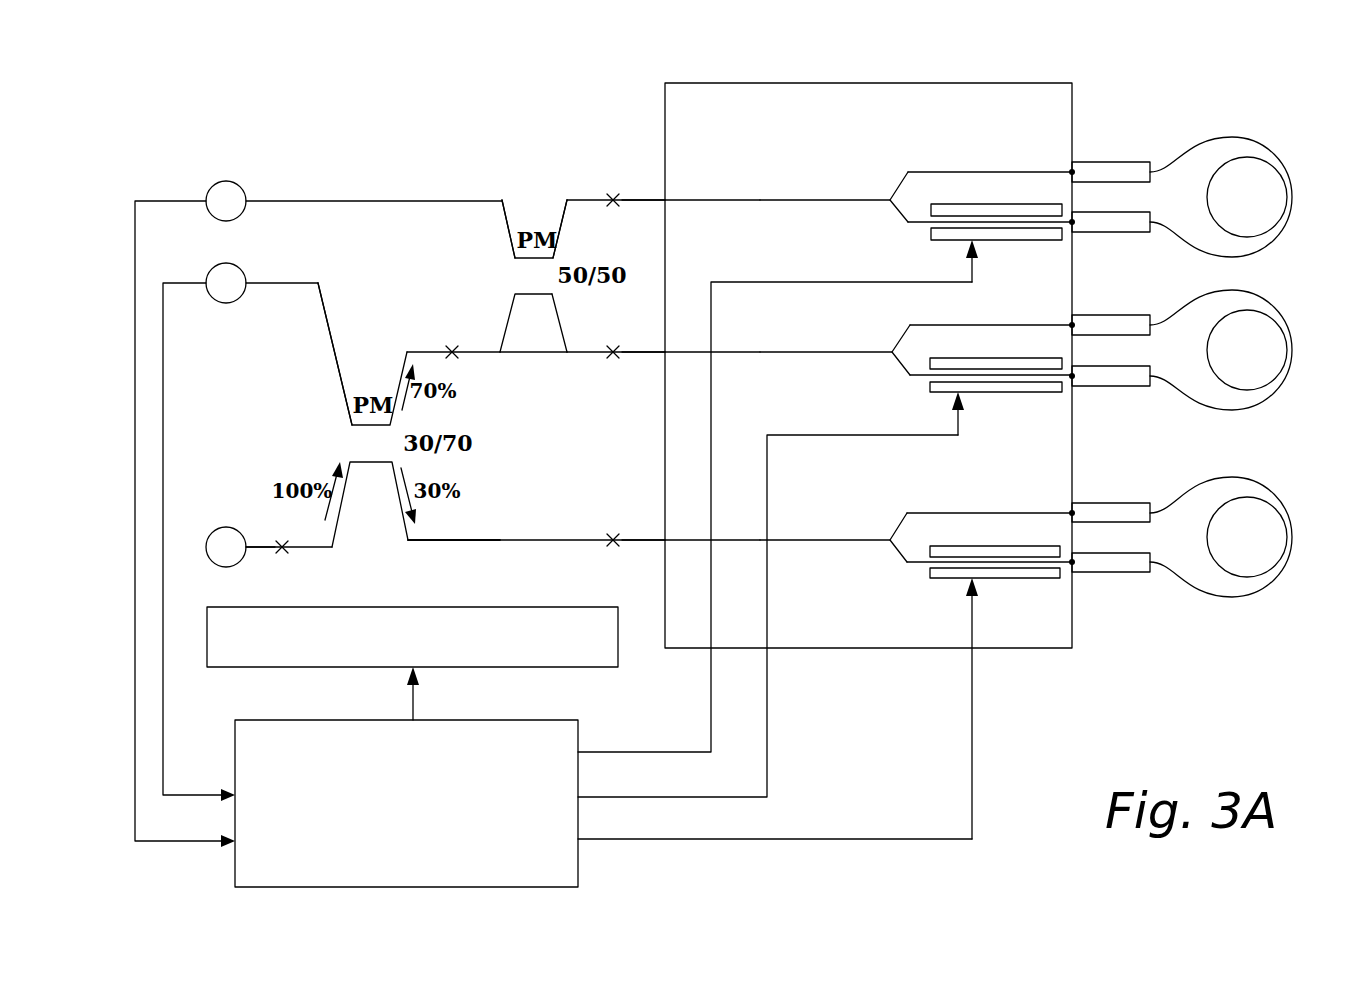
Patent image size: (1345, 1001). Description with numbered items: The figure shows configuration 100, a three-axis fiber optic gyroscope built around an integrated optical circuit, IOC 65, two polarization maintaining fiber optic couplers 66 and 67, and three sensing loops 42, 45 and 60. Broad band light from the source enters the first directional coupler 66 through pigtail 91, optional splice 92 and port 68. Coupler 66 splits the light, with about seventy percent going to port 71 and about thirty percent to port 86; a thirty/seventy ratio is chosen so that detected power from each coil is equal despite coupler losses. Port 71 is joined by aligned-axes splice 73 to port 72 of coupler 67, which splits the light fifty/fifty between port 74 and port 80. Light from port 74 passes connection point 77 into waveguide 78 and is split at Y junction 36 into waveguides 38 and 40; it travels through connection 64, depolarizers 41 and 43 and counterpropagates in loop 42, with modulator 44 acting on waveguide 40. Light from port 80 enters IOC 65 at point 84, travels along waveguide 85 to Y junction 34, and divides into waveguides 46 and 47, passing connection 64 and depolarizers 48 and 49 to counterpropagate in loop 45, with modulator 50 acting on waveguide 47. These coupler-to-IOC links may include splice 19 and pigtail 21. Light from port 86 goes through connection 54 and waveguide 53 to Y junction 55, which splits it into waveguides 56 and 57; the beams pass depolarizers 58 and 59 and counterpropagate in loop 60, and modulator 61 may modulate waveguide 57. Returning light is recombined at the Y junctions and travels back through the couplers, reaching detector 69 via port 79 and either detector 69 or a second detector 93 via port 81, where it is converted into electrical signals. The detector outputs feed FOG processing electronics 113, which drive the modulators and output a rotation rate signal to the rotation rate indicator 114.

The configuration 100 is at (1160, 69).
The IOC 65 is at (1060, 83).
The detector 69 is at (226, 181).
The second detector 93 is at (226, 303).
The modulator 61 is at (226, 527).
The port 81 is at (334, 298).
The first directional coupler 66 is at (352, 438).
The coupler 67 is at (515, 270).
The port 79 is at (512, 212).
The port 80 is at (562, 208).
The port 71 is at (407, 352).
The splice 73 is at (452, 346).
The port 72 is at (508, 338).
The port 74 is at (558, 340).
The port 68 is at (348, 505).
The port 86 is at (415, 540).
The pigtail 91 is at (242, 552).
The splice 92 is at (284, 554).
The splice 19 is at (614, 206).
The pigtail 21 is at (643, 199).
The point 84 is at (668, 199).
The waveguide 85 is at (760, 200).
The connection point 77 is at (668, 352).
The waveguide 78 is at (674, 353).
The connection 54 is at (668, 540).
The waveguide 53 is at (690, 541).
The Y junction 34 is at (886, 202).
The waveguide 46 is at (955, 172).
The waveguide 47 is at (915, 223).
The modulator 50 is at (965, 204).
The connection 64 is at (1072, 172).
The depolarizer 48 is at (1110, 162).
The depolarizer 49 is at (1118, 212).
The loop 45 is at (1290, 200).
The Y junction 36 is at (888, 354).
The waveguide 38 is at (985, 325).
The waveguide 40 is at (916, 376).
The modulator 44 is at (965, 358).
The depolarizer 41 is at (1125, 315).
The depolarizer 43 is at (1125, 366).
The loop 42 is at (1290, 350).
The Y junction 55 is at (888, 542).
The waveguide 56 is at (1040, 513).
The waveguide 57 is at (916, 563).
The depolarizer 58 is at (1130, 503).
The depolarizer 59 is at (1118, 553).
The loop 60 is at (1290, 540).
The indicator 114 is at (478, 607).
The FOG processing electronics 113 is at (315, 720).